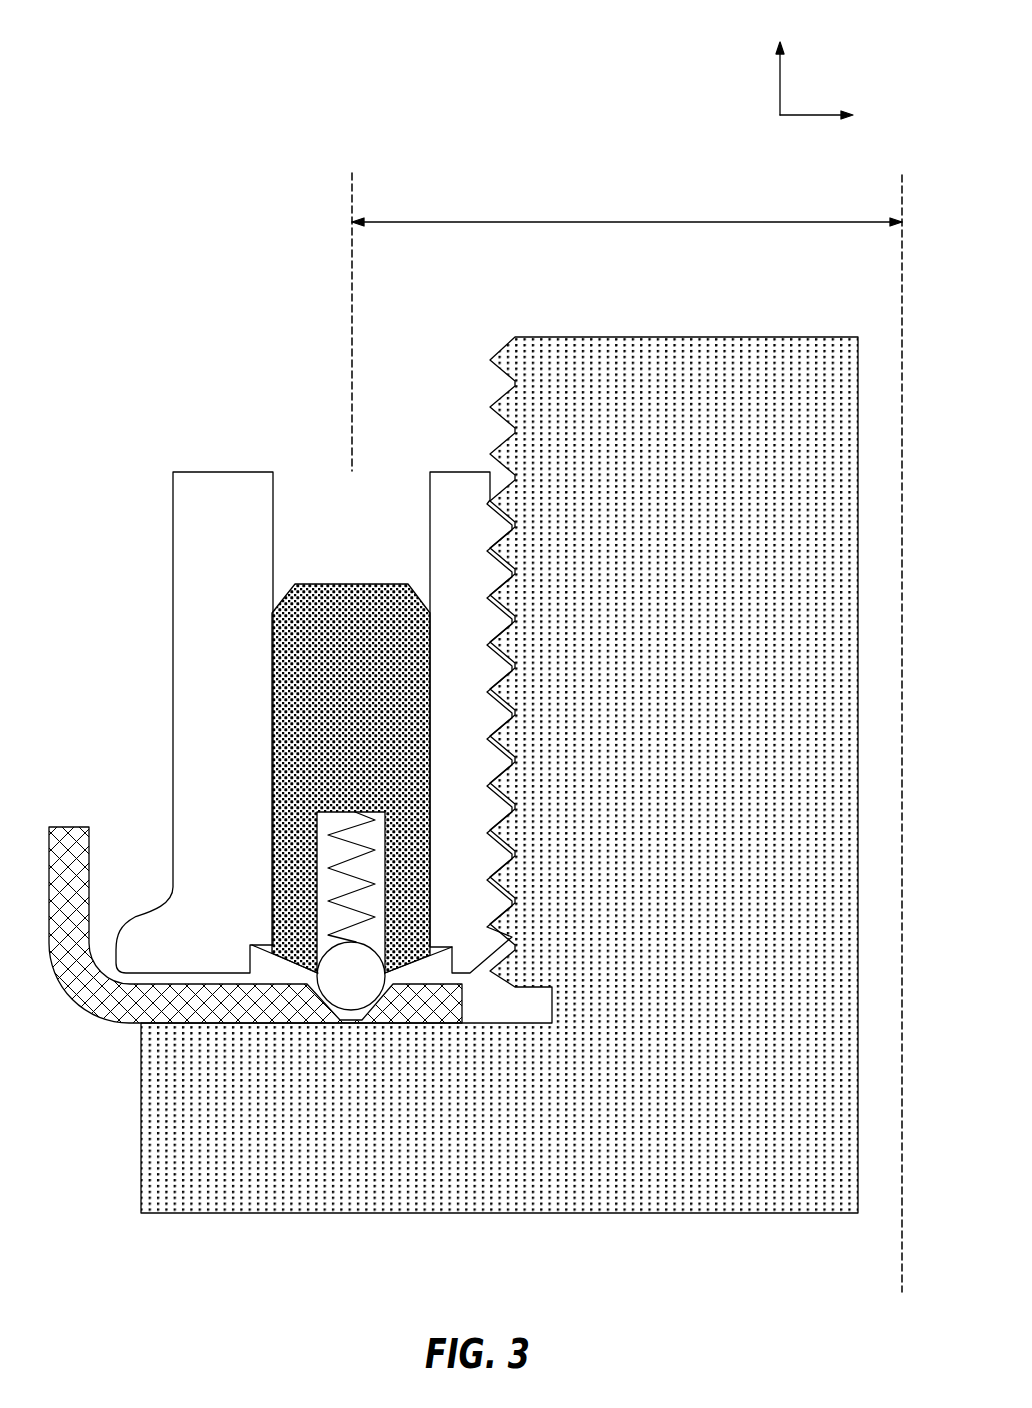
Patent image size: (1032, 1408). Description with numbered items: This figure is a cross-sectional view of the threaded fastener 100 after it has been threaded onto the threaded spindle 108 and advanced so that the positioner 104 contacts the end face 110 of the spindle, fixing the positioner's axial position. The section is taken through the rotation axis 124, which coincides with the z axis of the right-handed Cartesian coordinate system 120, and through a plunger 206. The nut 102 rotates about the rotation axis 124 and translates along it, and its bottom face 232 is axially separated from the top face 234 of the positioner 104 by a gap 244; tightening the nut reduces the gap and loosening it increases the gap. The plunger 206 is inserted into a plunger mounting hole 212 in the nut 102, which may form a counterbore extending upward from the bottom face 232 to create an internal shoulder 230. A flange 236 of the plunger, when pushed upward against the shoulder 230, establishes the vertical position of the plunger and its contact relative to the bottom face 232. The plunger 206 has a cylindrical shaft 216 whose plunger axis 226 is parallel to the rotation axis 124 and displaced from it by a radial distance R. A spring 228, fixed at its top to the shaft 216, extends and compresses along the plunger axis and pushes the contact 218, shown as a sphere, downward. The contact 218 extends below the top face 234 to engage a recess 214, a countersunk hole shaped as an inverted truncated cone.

The threaded fastener 100 is at (118, 65).
The nut 102 is at (172, 548).
The positioner 104 is at (69, 826).
The threaded spindle 108 is at (664, 336).
The end face 110 is at (270, 1034).
The right-handed Cartesian coordinate system 120 is at (843, 33).
The rotation axis 124 is at (900, 269).
The plunger 206 is at (349, 583).
The plunger mounting hole 212 is at (300, 452).
The recess 214 is at (365, 1032).
The cylindrical shaft 216 is at (372, 741).
The contact 218 is at (367, 989).
The plunger axis 226 is at (355, 271).
The spring 228 is at (316, 840).
The internal shoulder 230 is at (250, 945).
The bottom face 232 is at (192, 962).
The top face 234 is at (192, 997).
The flange 236 is at (443, 947).
The gap 244 is at (128, 982).